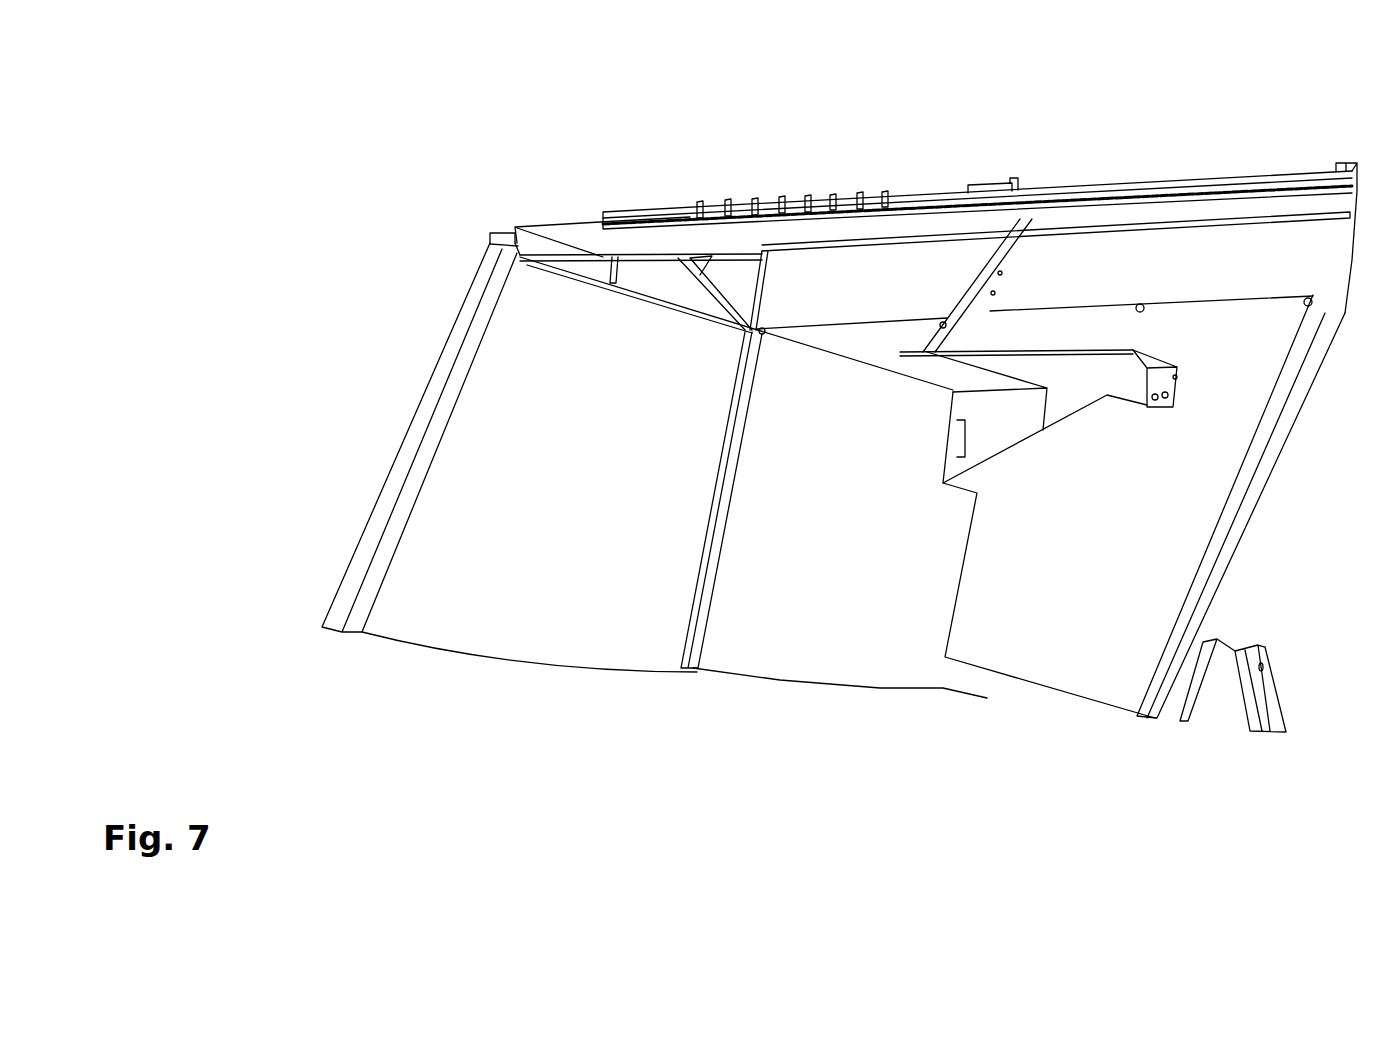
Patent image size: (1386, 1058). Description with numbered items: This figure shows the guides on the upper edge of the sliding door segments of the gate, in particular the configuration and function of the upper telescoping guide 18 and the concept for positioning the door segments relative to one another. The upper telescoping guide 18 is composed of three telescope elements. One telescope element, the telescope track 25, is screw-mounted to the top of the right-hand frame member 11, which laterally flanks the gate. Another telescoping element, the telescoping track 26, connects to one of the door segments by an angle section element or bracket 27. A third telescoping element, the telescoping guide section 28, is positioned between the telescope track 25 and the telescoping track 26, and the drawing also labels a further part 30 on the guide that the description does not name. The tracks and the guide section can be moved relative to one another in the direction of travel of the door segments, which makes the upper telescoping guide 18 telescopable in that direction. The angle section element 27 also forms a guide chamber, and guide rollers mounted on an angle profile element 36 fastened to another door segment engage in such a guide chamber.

The right-hand frame member 11 is at (607, 233).
The upper telescoping guide 18 is at (543, 218).
The telescope track 25 is at (507, 235).
The telescoping track 26 is at (872, 207).
The angle section element 27 is at (949, 194).
The telescoping guide section 28 is at (760, 210).
The locking bar 30 is at (703, 205).
The angle profile element 36 is at (1167, 181).